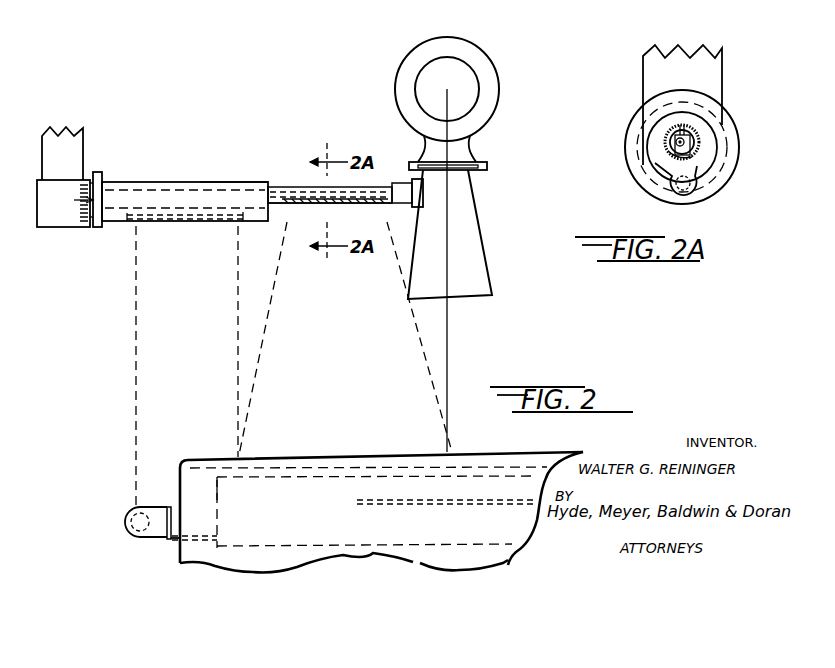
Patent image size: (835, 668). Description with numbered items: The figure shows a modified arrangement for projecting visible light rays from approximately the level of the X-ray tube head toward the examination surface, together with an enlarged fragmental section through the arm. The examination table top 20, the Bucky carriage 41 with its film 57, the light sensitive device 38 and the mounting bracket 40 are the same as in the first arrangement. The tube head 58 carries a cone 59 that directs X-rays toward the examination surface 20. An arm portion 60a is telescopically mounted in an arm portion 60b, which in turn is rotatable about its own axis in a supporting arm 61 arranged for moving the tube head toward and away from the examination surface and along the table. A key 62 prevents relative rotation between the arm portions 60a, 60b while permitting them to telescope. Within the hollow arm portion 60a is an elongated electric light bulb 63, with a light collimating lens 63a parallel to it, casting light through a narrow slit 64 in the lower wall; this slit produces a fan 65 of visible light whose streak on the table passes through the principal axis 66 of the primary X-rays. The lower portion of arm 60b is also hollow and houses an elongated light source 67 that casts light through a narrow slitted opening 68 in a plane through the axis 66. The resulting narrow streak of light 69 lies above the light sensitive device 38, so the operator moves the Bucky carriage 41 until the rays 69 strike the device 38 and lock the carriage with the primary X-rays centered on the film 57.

In FIG. 2, the examination table top 20 is at (528, 453).
In FIG. 2, the light sensitive device 38 is at (150, 510).
In FIG. 2, the mounting bracket 40 is at (173, 540).
In FIG. 2, the Bucky carriage 41 is at (219, 486).
In FIG. 2, the film 57 is at (470, 506).
In FIG. 2, the tube head 58 is at (490, 107).
In FIG. 2, the cone 59 is at (481, 224).
In FIG. 2, the arm portion 60a is at (283, 187).
In FIG. 2A, the arm portion 60a is at (690, 145).
In FIG. 2, the arm portion 60b is at (150, 182).
In FIG. 2A, the arm portion 60b is at (690, 134).
In FIG. 2, the supporting arm 61 is at (72, 156).
In FIG. 2A, the supporting arm 61 is at (712, 52).
In FIG. 2, the key 62 is at (246, 186).
In FIG. 2, the elongated electric light bulb 63 is at (396, 178).
In FIG. 2A, the elongated electric light bulb 63 is at (668, 142).
In FIG. 2, the light collimating lens 63a is at (386, 203).
In FIG. 2A, the light collimating lens 63a is at (670, 154).
In FIG. 2, the narrow slit 64 is at (292, 205).
In FIG. 2A, the narrow slit 64 is at (700, 166).
In FIG. 2, the fan of visible light rays 65 is at (263, 330).
In FIG. 2, the principal axis of the primary X-rays 66 is at (448, 344).
In FIG. 2, the elongated light source 67 is at (128, 216).
In FIG. 2A, the elongated light source 67 is at (668, 184).
In FIG. 2, the narrow slitted opening 68 is at (135, 222).
In FIG. 2, the narrow streak of light 69 is at (136, 303).